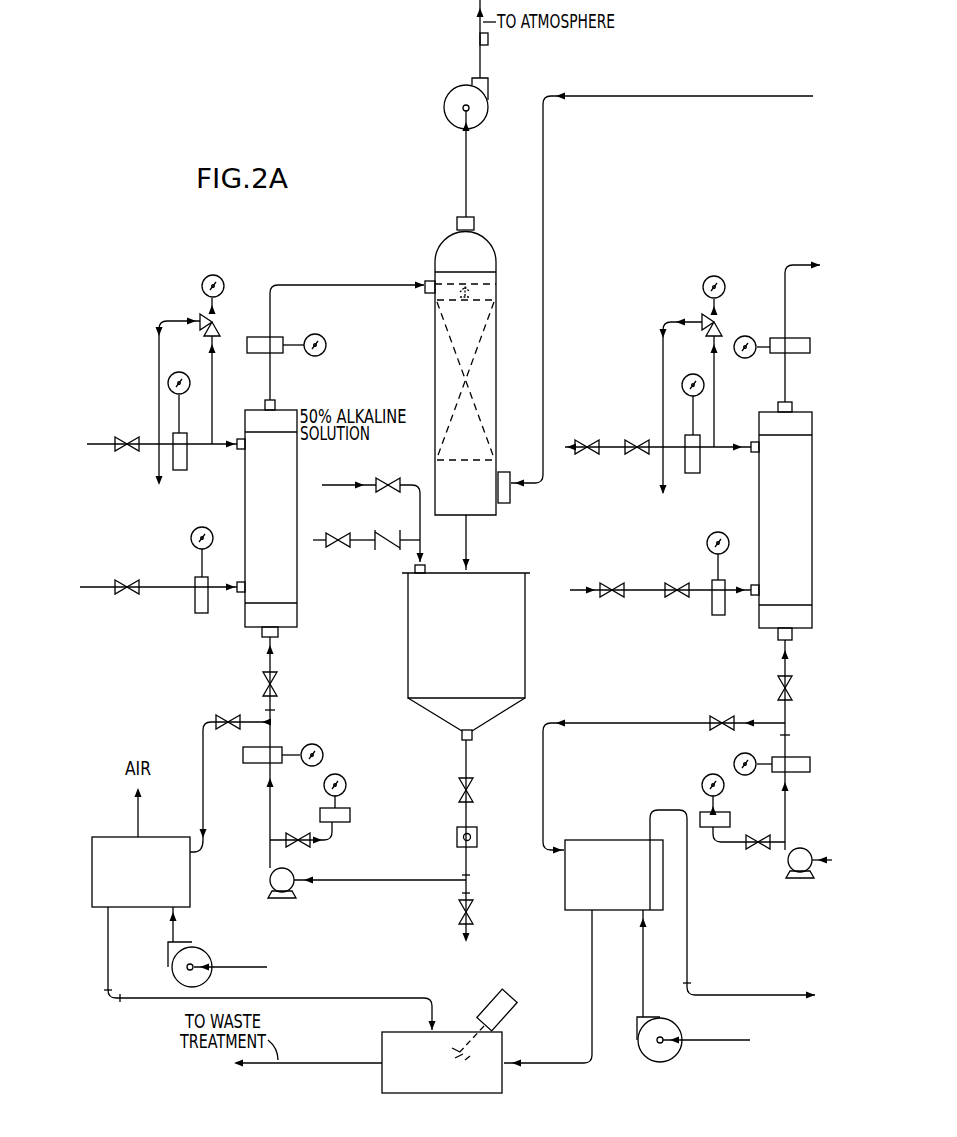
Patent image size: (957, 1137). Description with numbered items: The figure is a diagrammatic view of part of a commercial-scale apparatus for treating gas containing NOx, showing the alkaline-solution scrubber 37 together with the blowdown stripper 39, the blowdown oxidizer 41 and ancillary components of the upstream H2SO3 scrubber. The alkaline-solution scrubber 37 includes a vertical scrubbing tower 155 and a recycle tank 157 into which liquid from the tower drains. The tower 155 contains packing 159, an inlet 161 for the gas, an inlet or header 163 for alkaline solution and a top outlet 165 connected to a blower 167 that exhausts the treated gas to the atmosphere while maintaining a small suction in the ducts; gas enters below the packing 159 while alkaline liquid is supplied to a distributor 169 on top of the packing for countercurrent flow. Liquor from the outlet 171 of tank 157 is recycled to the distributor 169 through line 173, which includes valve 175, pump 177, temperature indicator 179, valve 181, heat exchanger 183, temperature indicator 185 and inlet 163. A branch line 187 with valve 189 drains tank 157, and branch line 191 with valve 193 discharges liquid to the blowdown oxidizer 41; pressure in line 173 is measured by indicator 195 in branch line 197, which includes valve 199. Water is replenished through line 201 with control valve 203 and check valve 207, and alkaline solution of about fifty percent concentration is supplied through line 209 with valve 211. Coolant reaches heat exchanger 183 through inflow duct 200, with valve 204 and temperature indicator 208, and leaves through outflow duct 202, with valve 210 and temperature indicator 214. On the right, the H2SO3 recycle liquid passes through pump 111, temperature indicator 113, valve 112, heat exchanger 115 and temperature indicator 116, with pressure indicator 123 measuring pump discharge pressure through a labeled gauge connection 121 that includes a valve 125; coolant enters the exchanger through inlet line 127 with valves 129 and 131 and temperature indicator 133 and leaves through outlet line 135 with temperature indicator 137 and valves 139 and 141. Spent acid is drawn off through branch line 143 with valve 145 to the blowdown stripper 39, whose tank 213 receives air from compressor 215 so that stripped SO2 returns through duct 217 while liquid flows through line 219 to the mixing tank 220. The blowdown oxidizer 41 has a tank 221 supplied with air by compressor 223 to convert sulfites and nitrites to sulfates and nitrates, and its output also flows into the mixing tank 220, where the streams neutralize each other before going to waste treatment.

The alkaline-solution scrubber 37 is at (400, 555).
The blowdown stripper 39 is at (605, 832).
The blowdown oxidizer 41 is at (155, 830).
The pump 111 is at (800, 848).
The valve 112 is at (777, 688).
The temperature indicator 113 is at (797, 757).
The heat exchanger 115 is at (755, 512).
The temperature indicator 116 is at (795, 338).
The recycle line 121 is at (742, 832).
The pressure indicator 123 is at (725, 790).
The valve 125 is at (757, 836).
The inlet line 127 is at (660, 590).
The valve 129 is at (618, 582).
The valve 131 is at (681, 582).
The temperature indicator 133 is at (717, 616).
The outlet line 135 is at (658, 387).
The temperature indicator 137 is at (690, 474).
The valve 139 is at (640, 438).
The valve 141 is at (584, 438).
The branch line 143 is at (664, 766).
The valve 145 is at (727, 713).
The vertical scrubbing tower 155 is at (461, 357).
The recycle tank 157 is at (527, 655).
The packing 159 is at (497, 348).
The inlet 161 is at (501, 478).
The inlet or header 163 is at (426, 283).
The top outlet 165 is at (475, 225).
The blower 167 is at (462, 88).
The distributor 169 is at (497, 283).
The outlet 171 is at (461, 735).
The line 173 is at (472, 859).
The valve 175 is at (458, 790).
The pump 177 is at (284, 898).
The temperature indicator 179 is at (280, 748).
The valve 181 is at (279, 684).
The heat exchanger 183 is at (240, 497).
The temperature indicator 185 is at (275, 338).
The branch line 187 is at (464, 912).
The valve 189 is at (457, 908).
The branch line 191 is at (209, 766).
The valve 193 is at (228, 712).
The indicator 195 is at (350, 816).
The branch line 197 is at (296, 848).
The valve 199 is at (327, 822).
The inflow duct 200 is at (158, 586).
The line 201 is at (362, 552).
The outflow duct 202 is at (162, 380).
The control valve 203 is at (332, 533).
The valve 204 is at (118, 580).
The check valve 207 is at (383, 533).
The temperature indicator 208 is at (200, 614).
The line 209 is at (356, 478).
The valve 210 is at (121, 437).
The valve 211 is at (384, 477).
The tank 213 is at (578, 838).
The temperature indicator 214 is at (187, 467).
The compressor 215 is at (672, 1062).
The duct 217 is at (688, 945).
The line 219 is at (534, 1067).
The mixing tank 220 is at (382, 1040).
The tank 221 is at (112, 835).
The compressor 223 is at (205, 952).